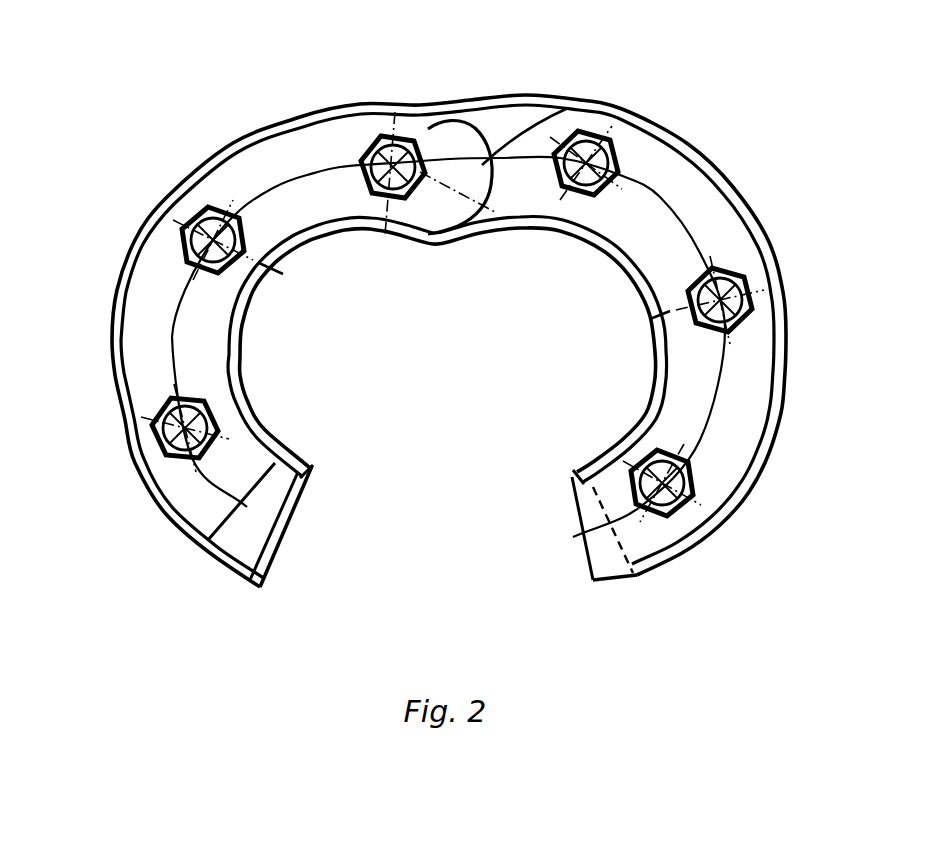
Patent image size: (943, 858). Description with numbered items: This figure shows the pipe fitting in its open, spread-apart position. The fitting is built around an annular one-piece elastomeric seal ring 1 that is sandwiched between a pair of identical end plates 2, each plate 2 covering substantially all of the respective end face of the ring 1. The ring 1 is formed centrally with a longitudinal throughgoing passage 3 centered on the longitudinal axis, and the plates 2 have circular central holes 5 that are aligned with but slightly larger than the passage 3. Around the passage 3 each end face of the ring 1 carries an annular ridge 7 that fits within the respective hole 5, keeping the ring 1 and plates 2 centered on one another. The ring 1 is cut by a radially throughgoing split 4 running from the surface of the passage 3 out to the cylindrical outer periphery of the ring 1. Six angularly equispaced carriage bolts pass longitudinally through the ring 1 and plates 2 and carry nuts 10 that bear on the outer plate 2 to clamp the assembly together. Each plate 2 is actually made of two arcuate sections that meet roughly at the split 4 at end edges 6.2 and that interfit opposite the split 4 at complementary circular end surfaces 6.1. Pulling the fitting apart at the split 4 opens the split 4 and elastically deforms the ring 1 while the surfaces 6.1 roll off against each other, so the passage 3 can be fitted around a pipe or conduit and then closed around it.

The seal ring 1 is at (220, 150).
The end plates 2 is at (145, 320).
The passage 3 is at (243, 338).
The split 4 is at (273, 593).
The central holes 5 is at (276, 269).
The complementary circular end surfaces 6.1 is at (483, 150).
The end edges 6.2 is at (250, 490).
The annular ridge 7 is at (252, 422).
The nuts 10 is at (606, 152).